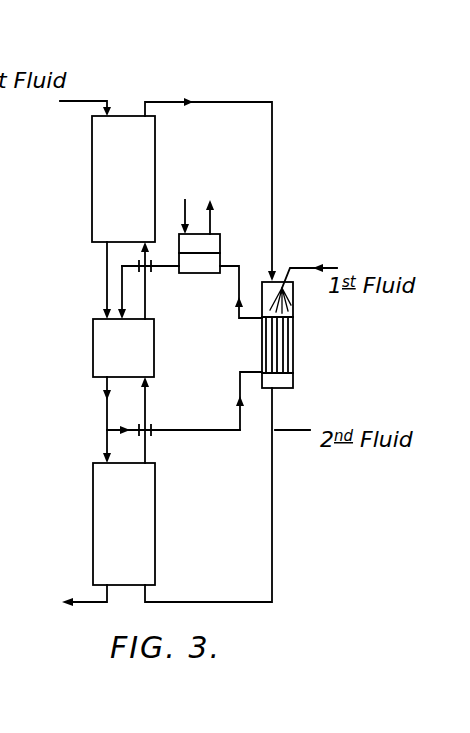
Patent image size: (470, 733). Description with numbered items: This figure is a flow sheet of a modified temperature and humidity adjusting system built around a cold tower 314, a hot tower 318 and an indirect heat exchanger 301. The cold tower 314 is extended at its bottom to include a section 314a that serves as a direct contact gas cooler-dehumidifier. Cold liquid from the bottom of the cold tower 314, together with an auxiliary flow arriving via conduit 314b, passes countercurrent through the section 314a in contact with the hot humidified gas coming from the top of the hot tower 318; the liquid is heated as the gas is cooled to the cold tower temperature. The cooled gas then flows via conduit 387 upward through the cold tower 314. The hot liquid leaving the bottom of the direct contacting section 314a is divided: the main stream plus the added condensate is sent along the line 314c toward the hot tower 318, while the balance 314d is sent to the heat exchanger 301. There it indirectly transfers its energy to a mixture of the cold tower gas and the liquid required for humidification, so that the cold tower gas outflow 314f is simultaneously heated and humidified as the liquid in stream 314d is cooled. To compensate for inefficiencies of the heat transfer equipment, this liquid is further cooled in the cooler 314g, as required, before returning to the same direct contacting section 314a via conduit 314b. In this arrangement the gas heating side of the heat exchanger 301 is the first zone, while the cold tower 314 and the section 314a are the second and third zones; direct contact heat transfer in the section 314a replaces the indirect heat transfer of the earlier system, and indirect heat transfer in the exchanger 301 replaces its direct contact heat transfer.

The cold tower 314 is at (138, 190).
The direct contact gas cooler-dehumidifier section 314a is at (123, 348).
The auxiliary flow conduit 314b is at (107, 272).
The conduit from unit 314a to unit 318 314c is at (105, 431).
The balance liquid stream 314d is at (249, 460).
The cold tower gas outflow 314f is at (175, 100).
The liquid cooler 314g is at (250, 192).
The hot tower 318 is at (138, 544).
The cooled gas conduit 387 is at (147, 302).
The heat exchanger 301 is at (260, 353).